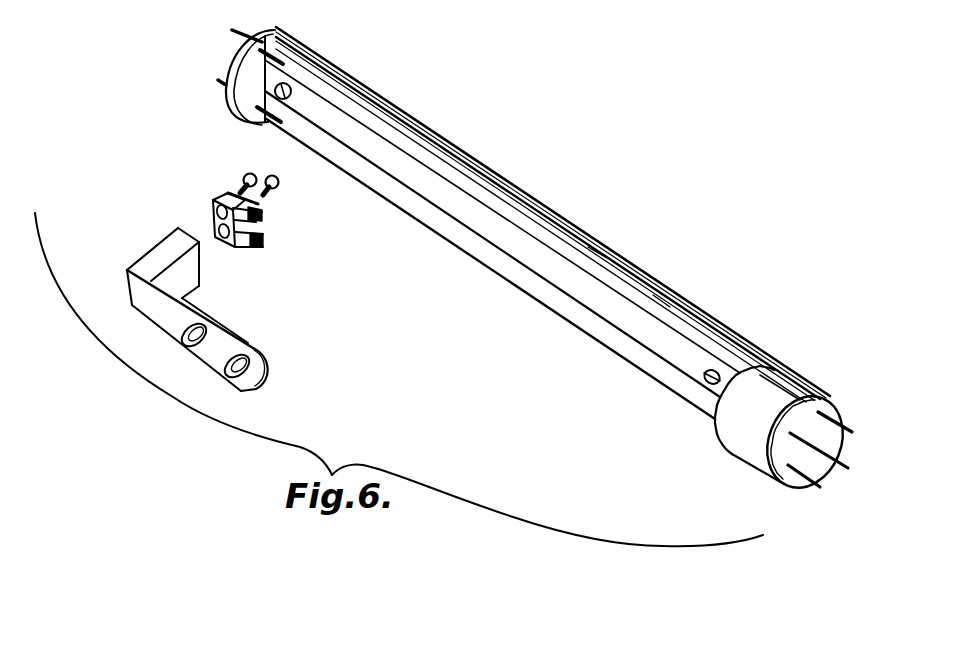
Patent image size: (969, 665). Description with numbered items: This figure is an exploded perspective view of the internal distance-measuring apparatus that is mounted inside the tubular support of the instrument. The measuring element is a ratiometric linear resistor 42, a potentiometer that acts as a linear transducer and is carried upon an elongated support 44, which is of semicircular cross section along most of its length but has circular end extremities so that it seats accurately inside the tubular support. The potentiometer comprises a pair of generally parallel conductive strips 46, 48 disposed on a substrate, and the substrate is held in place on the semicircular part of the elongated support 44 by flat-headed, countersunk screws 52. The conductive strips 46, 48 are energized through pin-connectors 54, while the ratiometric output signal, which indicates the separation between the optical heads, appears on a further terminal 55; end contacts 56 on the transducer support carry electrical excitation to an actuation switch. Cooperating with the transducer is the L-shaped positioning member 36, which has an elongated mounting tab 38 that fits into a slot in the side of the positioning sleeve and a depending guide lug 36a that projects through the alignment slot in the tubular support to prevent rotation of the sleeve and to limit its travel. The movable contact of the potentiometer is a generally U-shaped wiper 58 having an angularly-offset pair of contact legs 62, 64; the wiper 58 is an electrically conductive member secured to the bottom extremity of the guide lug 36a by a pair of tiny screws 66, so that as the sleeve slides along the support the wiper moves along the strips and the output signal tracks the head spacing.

The positioning member 36 is at (157, 266).
The guide lug 36a is at (187, 278).
The mounting tab 38 is at (221, 357).
The ratiometric linear resistor 42 is at (382, 180).
The elongated support 44 is at (408, 116).
The conductive strip 46 is at (450, 230).
The conductive strip 48 is at (468, 187).
The flat-headed countersunk screws 52 is at (291, 85).
The pin-connectors 54 is at (829, 400).
The terminal 55 is at (828, 462).
The end contacts 56 is at (218, 82).
The wiper 58 is at (213, 198).
The contact leg 62 is at (264, 245).
The contact leg 64 is at (263, 212).
The screws 66 is at (272, 175).